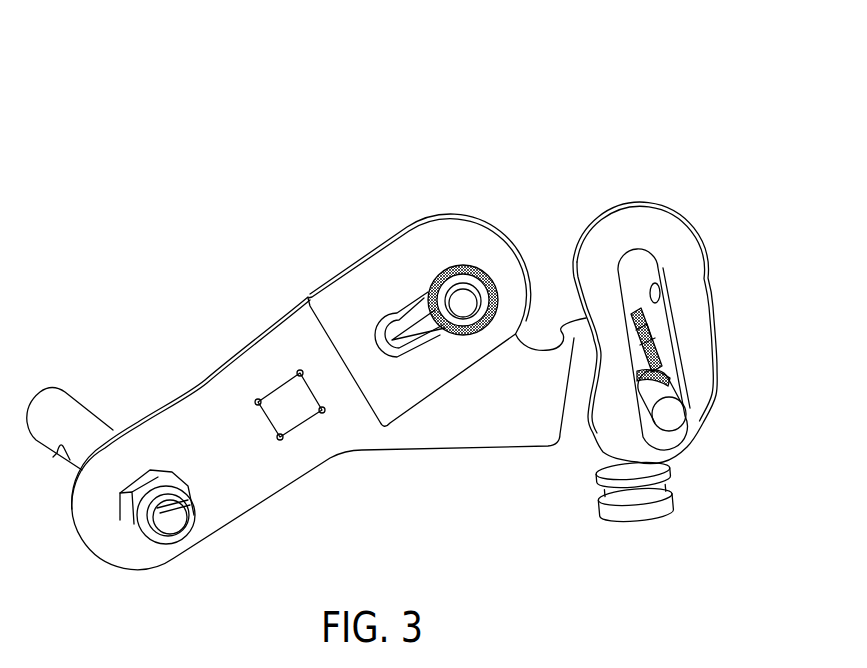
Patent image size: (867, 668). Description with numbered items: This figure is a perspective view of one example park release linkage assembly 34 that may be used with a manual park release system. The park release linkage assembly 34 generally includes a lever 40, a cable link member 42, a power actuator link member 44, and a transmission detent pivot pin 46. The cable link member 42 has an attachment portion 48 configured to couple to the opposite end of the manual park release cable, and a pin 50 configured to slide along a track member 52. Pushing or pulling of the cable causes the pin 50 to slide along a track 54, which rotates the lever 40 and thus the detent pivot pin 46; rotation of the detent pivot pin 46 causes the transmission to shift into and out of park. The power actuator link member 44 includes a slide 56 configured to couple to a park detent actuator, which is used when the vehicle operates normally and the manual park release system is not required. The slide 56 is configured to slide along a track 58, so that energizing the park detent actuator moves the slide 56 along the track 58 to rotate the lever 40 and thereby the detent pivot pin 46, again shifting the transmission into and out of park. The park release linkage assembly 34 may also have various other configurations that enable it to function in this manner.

The park release linkage assembly 34 is at (743, 82).
The lever 40 is at (265, 485).
The cable link member 42 is at (737, 320).
The power actuator link member 44 is at (471, 191).
The transmission detent pivot pin 46 is at (178, 528).
The attachment portion 48 is at (659, 493).
The pin 50 is at (671, 417).
The track member 52 is at (680, 243).
The track 54 is at (655, 302).
The slide 56 is at (469, 303).
The track 58 is at (395, 316).